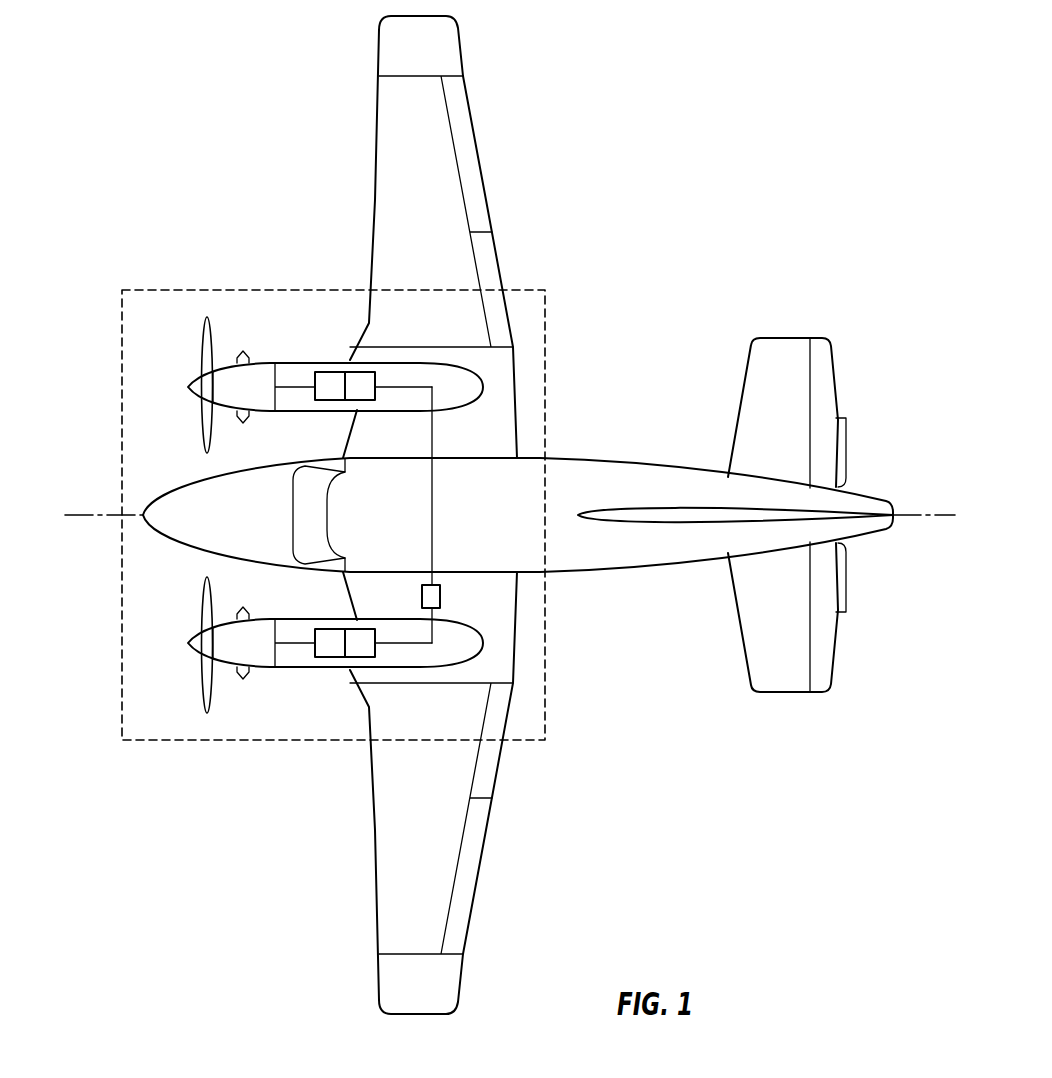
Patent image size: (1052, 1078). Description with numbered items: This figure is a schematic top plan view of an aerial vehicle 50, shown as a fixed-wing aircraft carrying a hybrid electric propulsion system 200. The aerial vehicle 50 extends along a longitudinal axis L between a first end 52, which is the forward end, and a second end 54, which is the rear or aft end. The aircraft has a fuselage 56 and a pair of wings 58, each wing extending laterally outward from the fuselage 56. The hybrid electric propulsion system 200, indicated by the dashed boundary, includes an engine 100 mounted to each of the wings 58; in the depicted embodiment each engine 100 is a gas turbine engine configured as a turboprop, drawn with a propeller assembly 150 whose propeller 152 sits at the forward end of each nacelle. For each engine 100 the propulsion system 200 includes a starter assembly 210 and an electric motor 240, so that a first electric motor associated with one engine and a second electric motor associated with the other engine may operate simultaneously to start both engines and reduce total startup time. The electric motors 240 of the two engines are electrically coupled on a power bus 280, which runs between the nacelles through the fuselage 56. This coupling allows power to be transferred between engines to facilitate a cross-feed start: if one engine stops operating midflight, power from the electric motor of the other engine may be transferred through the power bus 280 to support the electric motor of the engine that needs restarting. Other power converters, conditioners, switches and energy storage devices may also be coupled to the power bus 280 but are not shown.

The aerial vehicle 50 is at (737, 78).
The first end 52 is at (138, 546).
The second end 54 is at (824, 722).
The fuselage 56 is at (638, 461).
The wings 58 is at (385, 177).
The engine 100 is at (445, 379).
The propulsor assembly 150 is at (176, 336).
The propeller 152 is at (211, 338).
The hybrid electric propulsion system 200 is at (546, 310).
The starter assembly 210 is at (376, 381).
The electric motor 240 is at (330, 378).
The power bus 280 is at (430, 535).